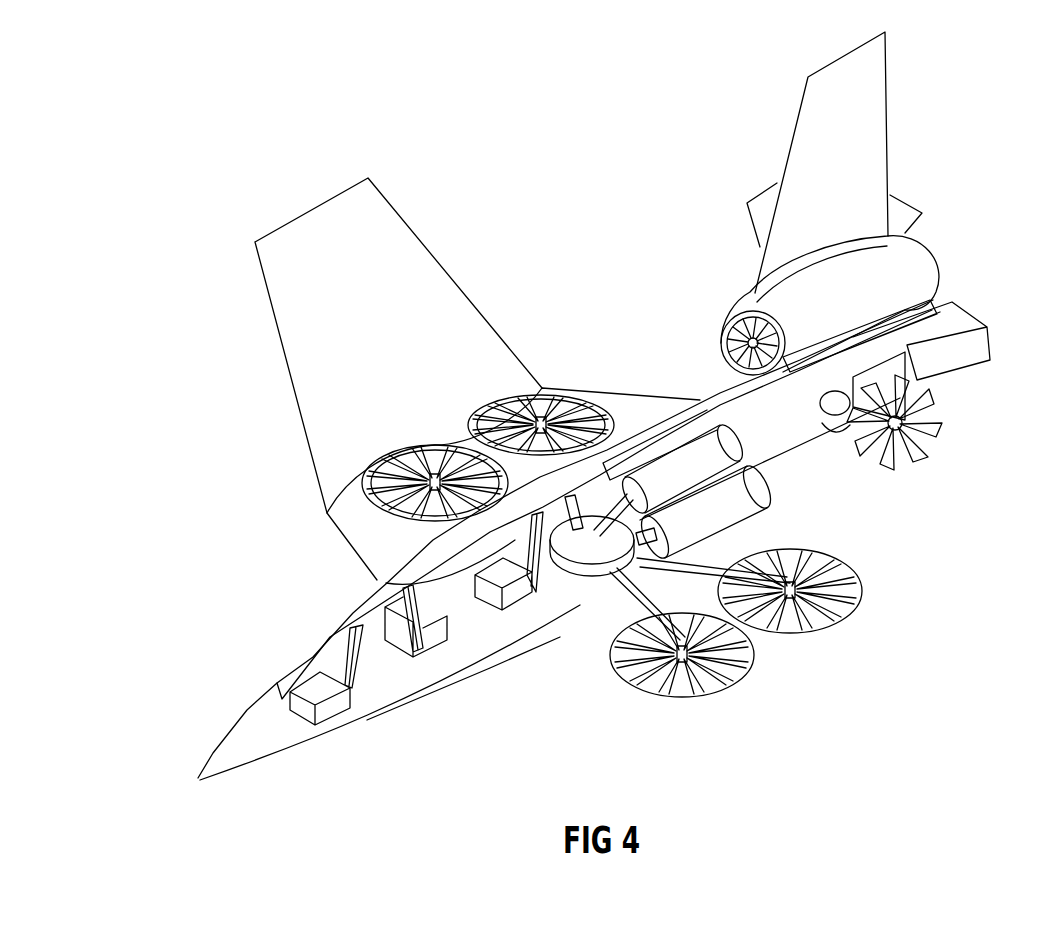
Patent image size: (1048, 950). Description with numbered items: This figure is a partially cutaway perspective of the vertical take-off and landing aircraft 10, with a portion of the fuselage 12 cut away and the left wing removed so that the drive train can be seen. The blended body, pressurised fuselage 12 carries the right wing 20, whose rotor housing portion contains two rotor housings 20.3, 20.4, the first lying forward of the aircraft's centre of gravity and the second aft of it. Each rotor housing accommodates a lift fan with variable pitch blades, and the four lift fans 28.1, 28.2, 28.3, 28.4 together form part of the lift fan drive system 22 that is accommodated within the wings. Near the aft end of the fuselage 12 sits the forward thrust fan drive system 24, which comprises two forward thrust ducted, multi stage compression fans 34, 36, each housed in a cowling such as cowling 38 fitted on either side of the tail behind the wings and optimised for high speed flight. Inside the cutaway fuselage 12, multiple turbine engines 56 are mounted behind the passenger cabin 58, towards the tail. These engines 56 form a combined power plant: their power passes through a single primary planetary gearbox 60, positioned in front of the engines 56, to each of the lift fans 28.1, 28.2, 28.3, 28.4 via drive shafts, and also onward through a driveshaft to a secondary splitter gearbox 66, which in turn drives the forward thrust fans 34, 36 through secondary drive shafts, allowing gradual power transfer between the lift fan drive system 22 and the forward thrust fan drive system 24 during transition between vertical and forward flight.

The vertical take-off and landing (VTOL) aircraft 10 is at (583, 408).
The fuselage 12 is at (247, 715).
The right wing 20 is at (302, 310).
The rotor housing 20.3 is at (428, 455).
The rotor housing 20.4 is at (590, 427).
The lift fan drive system 22 is at (520, 427).
The forward thrust fan drive system 24 is at (834, 397).
The lift fan 28.1 is at (686, 690).
The lift fan 28.2 is at (787, 575).
The lift fan 28.3 is at (388, 493).
The lift fan 28.4 is at (542, 412).
The forward thrust ducted multi stage compression fan 34 is at (752, 350).
The forward thrust ducted multi stage compression fan 36 is at (927, 432).
The cowling 38 is at (908, 270).
The turbine engines 56 is at (733, 508).
The passenger cabin 58 is at (457, 590).
The primary planetary gearbox 60 is at (580, 580).
The secondary splitter gearbox 66 is at (842, 427).